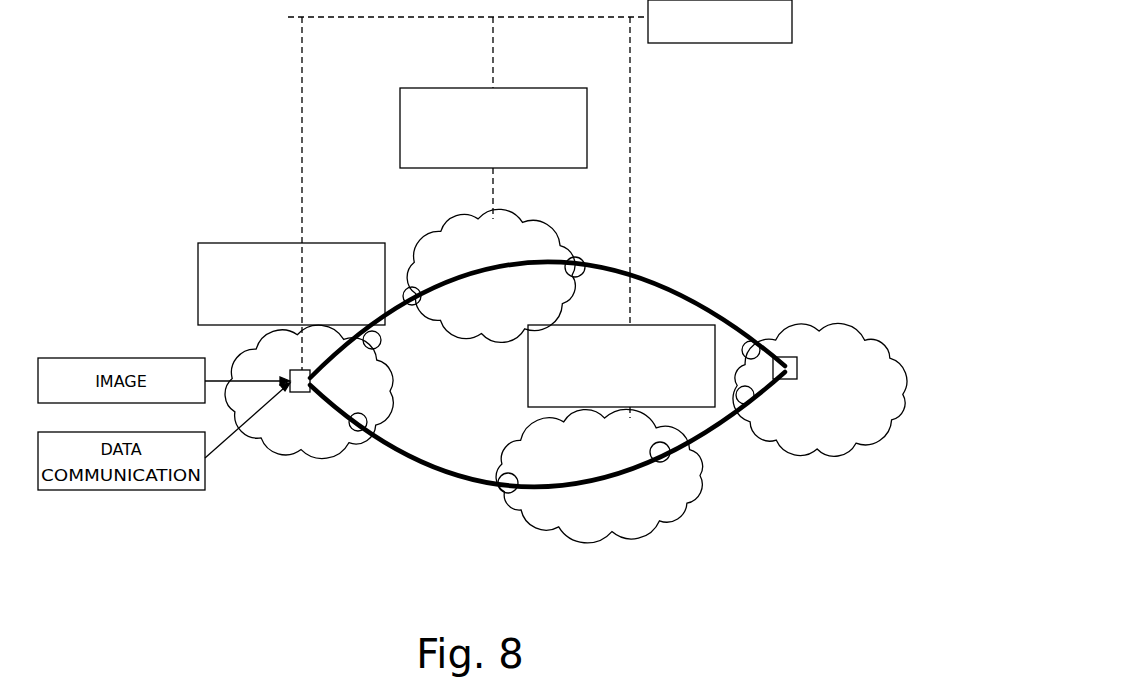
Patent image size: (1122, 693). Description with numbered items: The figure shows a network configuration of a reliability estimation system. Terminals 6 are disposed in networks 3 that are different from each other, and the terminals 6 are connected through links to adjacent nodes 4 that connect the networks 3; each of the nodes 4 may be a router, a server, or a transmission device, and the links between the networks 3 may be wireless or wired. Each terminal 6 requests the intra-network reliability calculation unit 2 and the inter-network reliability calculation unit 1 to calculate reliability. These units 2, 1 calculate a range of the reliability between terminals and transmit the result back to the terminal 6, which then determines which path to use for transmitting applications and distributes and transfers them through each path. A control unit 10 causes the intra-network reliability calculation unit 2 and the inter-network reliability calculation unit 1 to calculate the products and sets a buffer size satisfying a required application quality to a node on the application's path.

The inter-network reliability calculation unit 1 is at (322, 243).
The intra-network reliability calculation unit 2 is at (528, 88).
The network 3 is at (392, 379).
The node 4 is at (381, 336).
The terminal 6 is at (310, 372).
The control unit 10 is at (699, 44).